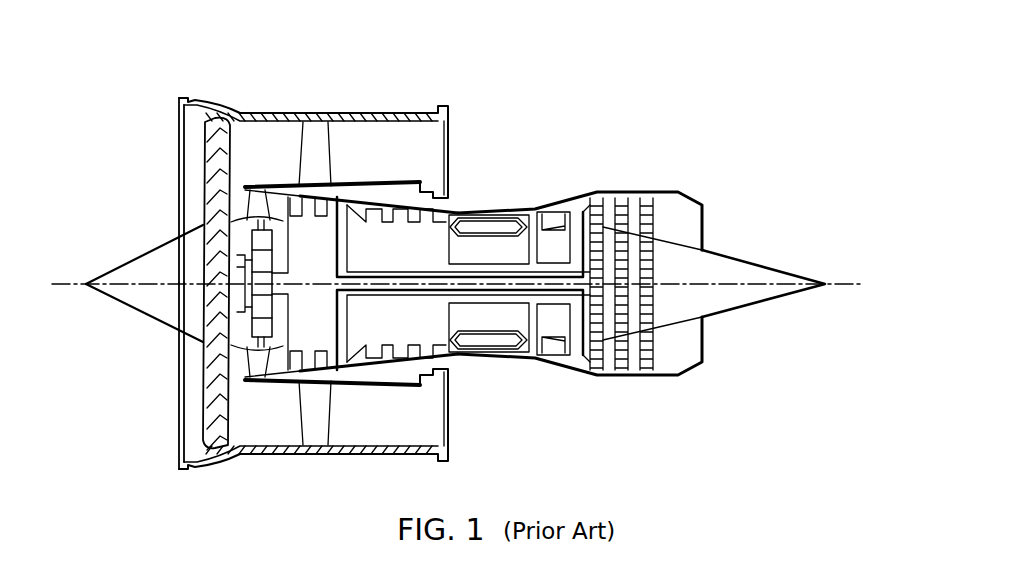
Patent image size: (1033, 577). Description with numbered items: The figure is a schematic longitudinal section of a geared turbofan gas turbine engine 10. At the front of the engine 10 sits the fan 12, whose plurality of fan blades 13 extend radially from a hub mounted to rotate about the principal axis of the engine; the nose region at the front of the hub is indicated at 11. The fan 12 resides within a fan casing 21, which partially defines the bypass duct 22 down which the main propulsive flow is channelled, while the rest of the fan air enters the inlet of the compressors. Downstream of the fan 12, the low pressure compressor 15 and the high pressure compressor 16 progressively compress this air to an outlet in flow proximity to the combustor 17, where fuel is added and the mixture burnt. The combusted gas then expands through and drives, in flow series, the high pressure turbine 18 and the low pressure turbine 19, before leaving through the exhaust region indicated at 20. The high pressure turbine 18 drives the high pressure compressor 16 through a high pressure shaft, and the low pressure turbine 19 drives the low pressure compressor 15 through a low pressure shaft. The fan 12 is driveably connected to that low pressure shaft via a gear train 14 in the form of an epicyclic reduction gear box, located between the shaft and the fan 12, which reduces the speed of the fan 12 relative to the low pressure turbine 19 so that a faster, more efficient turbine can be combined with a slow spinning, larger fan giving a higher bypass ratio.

The geared gas turbine engine 10 is at (716, 107).
The air intake / nose cone 11 is at (73, 282).
The fan 12 is at (158, 148).
The fan blades 13 is at (216, 402).
The gear train 14 is at (270, 340).
The low pressure compressor 15 is at (305, 191).
The high pressure compressor 16 is at (432, 245).
The combustor 17 is at (485, 343).
The high pressure turbine 18 is at (573, 220).
The low pressure turbine 19 is at (622, 200).
The exhaust nozzle 20 is at (690, 230).
The fan casing 21 is at (357, 112).
The bypass duct 22 is at (428, 141).